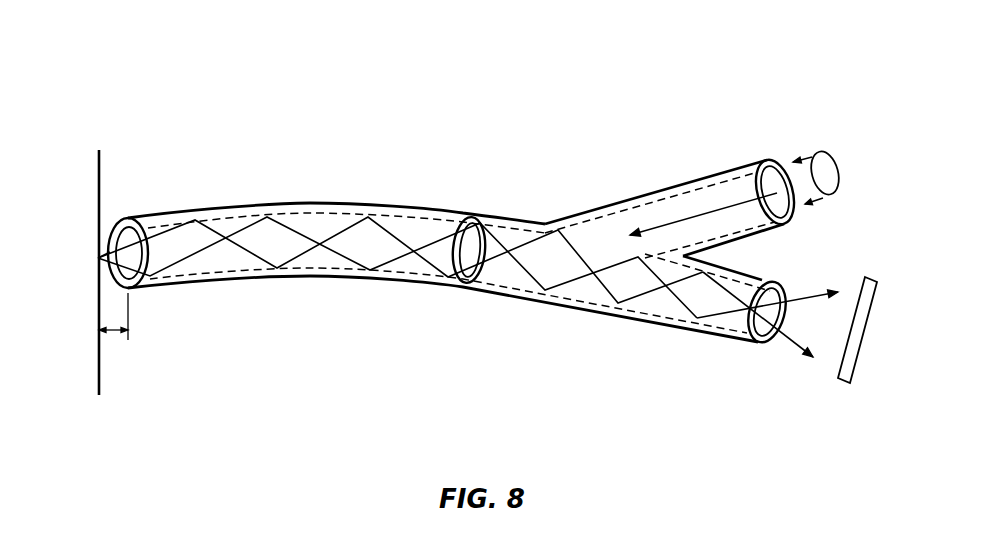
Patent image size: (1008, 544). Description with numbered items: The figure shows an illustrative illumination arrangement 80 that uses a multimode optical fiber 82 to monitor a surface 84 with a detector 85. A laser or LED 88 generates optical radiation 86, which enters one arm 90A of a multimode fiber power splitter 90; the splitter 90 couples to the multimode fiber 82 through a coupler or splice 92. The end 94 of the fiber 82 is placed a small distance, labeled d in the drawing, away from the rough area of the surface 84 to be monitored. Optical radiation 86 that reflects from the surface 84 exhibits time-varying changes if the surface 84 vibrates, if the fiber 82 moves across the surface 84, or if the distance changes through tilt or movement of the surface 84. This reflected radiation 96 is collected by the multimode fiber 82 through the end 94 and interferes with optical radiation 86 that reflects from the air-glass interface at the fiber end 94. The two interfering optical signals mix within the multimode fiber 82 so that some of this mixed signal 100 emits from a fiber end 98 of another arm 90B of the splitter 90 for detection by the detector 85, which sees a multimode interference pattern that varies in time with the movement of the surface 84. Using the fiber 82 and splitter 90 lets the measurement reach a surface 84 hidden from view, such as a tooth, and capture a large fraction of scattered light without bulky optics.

The illumination arrangement 80 is at (510, 80).
The multimode optical fiber 82 is at (358, 280).
The surface 84 is at (99, 190).
The detector 85 is at (863, 352).
The optical radiation 86 is at (728, 207).
The laser or LED 88 is at (840, 186).
The multimode fiber power splitter 90 is at (673, 261).
The arm 90A is at (673, 183).
The another arm 90B is at (695, 325).
The coupler or splice 92 is at (457, 283).
The end 94 is at (125, 286).
The reflected radiation 96 is at (98, 258).
The fiber end 98 is at (790, 292).
The mixed signal 100 is at (793, 343).